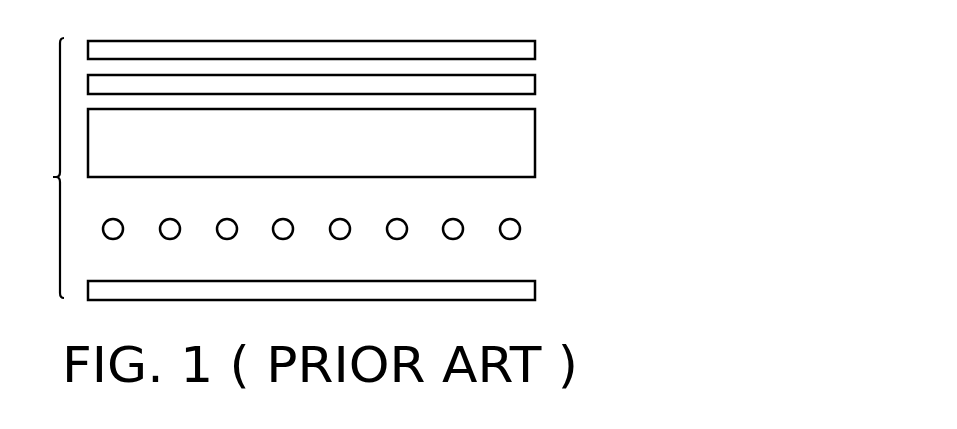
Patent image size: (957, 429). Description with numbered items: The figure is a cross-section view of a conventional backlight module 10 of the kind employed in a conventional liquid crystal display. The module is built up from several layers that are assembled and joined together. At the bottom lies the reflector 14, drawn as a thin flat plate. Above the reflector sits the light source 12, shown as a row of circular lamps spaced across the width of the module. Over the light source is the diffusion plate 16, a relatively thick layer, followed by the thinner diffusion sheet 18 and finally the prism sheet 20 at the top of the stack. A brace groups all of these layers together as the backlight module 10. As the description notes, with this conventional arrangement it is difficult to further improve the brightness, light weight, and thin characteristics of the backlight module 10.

The backlight module 10 is at (40, 168).
The light source 12 is at (521, 228).
The reflector 14 is at (536, 288).
The diffusion plate 16 is at (536, 142).
The diffusion sheet 18 is at (536, 82).
The prism sheet 20 is at (536, 46).